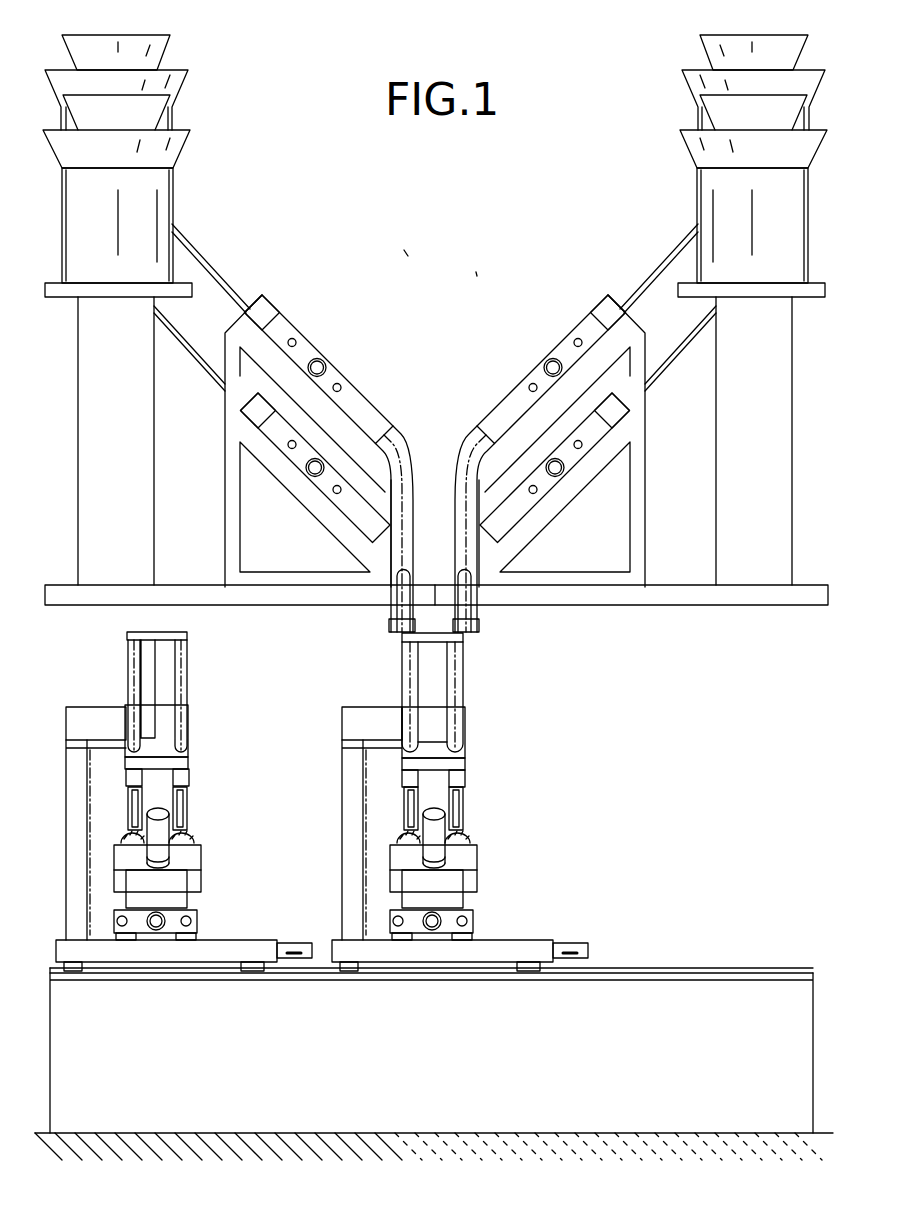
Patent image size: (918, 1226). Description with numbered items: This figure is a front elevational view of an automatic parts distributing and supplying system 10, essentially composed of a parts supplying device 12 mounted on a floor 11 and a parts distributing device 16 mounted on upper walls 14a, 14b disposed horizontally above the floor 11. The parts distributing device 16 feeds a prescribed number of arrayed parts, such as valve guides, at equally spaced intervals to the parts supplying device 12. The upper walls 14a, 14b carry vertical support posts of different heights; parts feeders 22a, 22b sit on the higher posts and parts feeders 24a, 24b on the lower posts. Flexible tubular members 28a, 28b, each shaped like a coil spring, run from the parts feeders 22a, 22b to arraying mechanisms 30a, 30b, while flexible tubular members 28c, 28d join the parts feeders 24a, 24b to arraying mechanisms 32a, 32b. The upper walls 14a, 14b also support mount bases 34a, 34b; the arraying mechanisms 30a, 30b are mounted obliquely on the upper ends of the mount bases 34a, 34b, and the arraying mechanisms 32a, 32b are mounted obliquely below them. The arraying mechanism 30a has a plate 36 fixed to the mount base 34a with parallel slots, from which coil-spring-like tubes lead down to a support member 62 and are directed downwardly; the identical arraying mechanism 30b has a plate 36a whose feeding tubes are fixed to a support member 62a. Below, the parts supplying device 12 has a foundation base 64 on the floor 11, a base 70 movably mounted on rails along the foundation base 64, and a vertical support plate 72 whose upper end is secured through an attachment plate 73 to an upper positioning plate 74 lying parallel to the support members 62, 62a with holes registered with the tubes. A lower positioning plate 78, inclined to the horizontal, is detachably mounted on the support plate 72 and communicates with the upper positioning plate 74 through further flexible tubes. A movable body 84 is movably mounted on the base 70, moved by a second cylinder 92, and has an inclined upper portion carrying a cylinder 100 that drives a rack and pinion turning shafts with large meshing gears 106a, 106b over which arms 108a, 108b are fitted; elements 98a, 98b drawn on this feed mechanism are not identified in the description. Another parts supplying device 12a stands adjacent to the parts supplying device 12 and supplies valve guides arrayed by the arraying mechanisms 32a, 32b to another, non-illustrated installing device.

The automatic parts distributing and supplying system 10 is at (406, 243).
The parts distributing device 16 is at (479, 266).
The parts feeder 22a is at (140, 58).
The parts feeder 22b is at (730, 58).
The parts feeder 24a is at (155, 202).
The parts feeder 24b is at (715, 202).
The flexible tubular member 28a is at (232, 289).
The flexible tubular member 28b is at (638, 289).
The flexible tubular member 28c is at (186, 350).
The flexible tubular member 28d is at (672, 350).
The arraying mechanism 30a is at (324, 334).
The arraying mechanism 30b is at (522, 360).
The arraying mechanism 32a is at (310, 506).
The arraying mechanism 32b is at (560, 506).
The mount base 34a is at (225, 519).
The mount base 34b is at (645, 519).
The plate 36 is at (348, 427).
The plate 36a is at (515, 433).
The support member 62 is at (389, 627).
The support member 62a is at (479, 627).
The upper wall 14a is at (273, 606).
The upper wall 14b is at (681, 606).
The parts supplying device 12 is at (528, 787).
The parts supplying device 12a is at (204, 742).
The upper positioning plate 74 is at (464, 638).
The vertical support plate 72 is at (341, 828).
The attachment plate 73 is at (356, 720).
The lower positioning plate 78 is at (446, 737).
The guide block 98a is at (401, 778).
The guide block 98b is at (466, 778).
The arm 108a is at (403, 804).
The arm 108b is at (464, 803).
The cylinder 100 is at (446, 834).
The gear 106a is at (395, 840).
The gear 106b is at (468, 840).
The movable body 84 is at (447, 900).
The second cylinder 92 is at (434, 932).
The base 70 is at (530, 948).
The foundation base 64 is at (657, 1110).
The floor 11 is at (552, 1138).